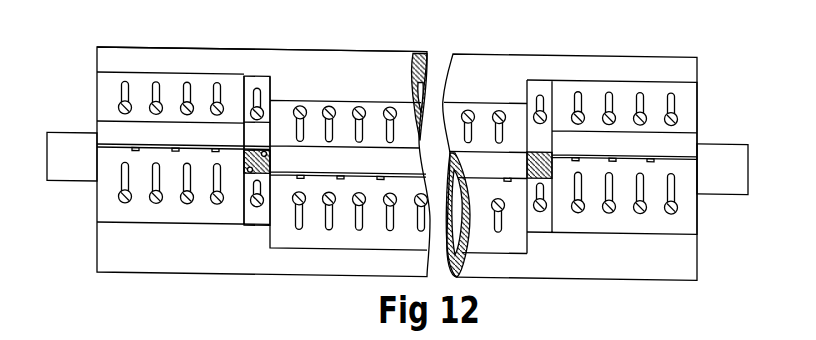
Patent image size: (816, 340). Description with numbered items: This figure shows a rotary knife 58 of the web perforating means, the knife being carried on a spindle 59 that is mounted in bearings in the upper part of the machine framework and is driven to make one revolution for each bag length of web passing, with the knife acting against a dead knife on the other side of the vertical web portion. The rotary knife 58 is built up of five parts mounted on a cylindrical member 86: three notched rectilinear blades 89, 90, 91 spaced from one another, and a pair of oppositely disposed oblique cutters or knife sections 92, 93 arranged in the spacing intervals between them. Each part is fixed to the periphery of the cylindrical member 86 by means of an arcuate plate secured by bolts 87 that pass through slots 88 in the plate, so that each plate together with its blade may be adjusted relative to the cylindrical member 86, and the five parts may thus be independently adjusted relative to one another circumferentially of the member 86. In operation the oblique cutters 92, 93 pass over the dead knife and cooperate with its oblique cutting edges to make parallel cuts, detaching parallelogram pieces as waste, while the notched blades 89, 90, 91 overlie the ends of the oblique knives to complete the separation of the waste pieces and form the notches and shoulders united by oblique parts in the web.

The rotary knife 58 is at (257, 42).
The spindle 59 is at (72, 186).
The cylindrical member 86 is at (154, 52).
The bolt 87 is at (672, 112).
The slot 88 is at (641, 112).
The notched rectilinear blade 89 is at (108, 147).
The notched rectilinear blade 90 is at (282, 174).
The notched rectilinear blade 91 is at (565, 157).
The oblique cutter 92 is at (250, 150).
The oblique cutter 93 is at (540, 157).